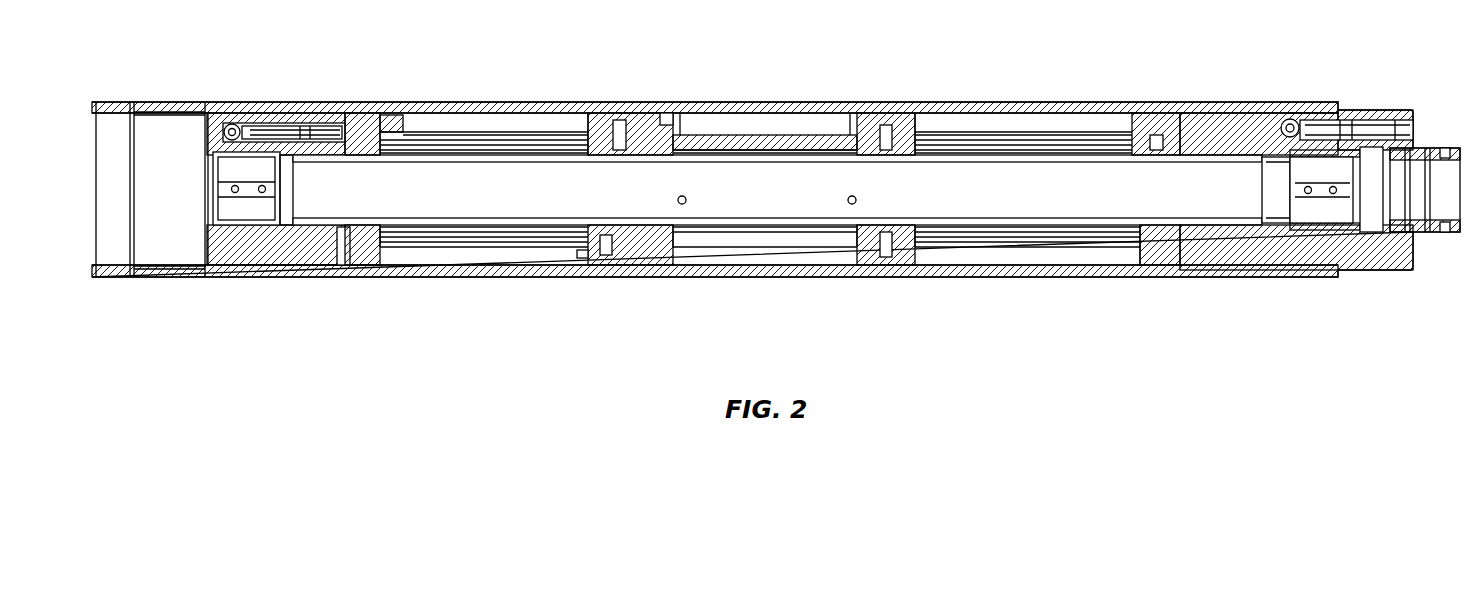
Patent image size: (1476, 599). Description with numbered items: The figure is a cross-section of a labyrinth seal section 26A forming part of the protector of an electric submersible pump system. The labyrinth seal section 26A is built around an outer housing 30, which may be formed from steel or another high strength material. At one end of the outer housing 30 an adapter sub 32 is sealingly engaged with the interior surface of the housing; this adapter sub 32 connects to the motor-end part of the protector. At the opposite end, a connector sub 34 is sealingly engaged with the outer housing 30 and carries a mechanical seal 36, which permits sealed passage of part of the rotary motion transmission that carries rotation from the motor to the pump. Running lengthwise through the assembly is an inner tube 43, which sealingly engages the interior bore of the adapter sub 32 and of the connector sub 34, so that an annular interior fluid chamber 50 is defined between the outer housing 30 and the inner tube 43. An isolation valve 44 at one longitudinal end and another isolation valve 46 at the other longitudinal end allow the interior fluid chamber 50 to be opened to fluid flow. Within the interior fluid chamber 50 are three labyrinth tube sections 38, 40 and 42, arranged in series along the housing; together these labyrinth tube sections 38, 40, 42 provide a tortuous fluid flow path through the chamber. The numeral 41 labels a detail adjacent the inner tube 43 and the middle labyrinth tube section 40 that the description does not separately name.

The labyrinth seal section 26A is at (438, 350).
The outer housing 30 is at (382, 277).
The adapter sub 32 is at (173, 277).
The connector sub 34 is at (1278, 278).
The mechanical seal 36 is at (1425, 233).
The labyrinth tube section 38 is at (485, 122).
The labyrinth tube section 40 is at (760, 120).
The mandrel 41 is at (681, 158).
The labyrinth tube section 42 is at (1047, 120).
The inner tube 43 is at (758, 222).
The isolation valve 44 is at (250, 122).
The isolation valve 46 is at (1387, 130).
The interior fluid chamber 50 is at (1048, 258).